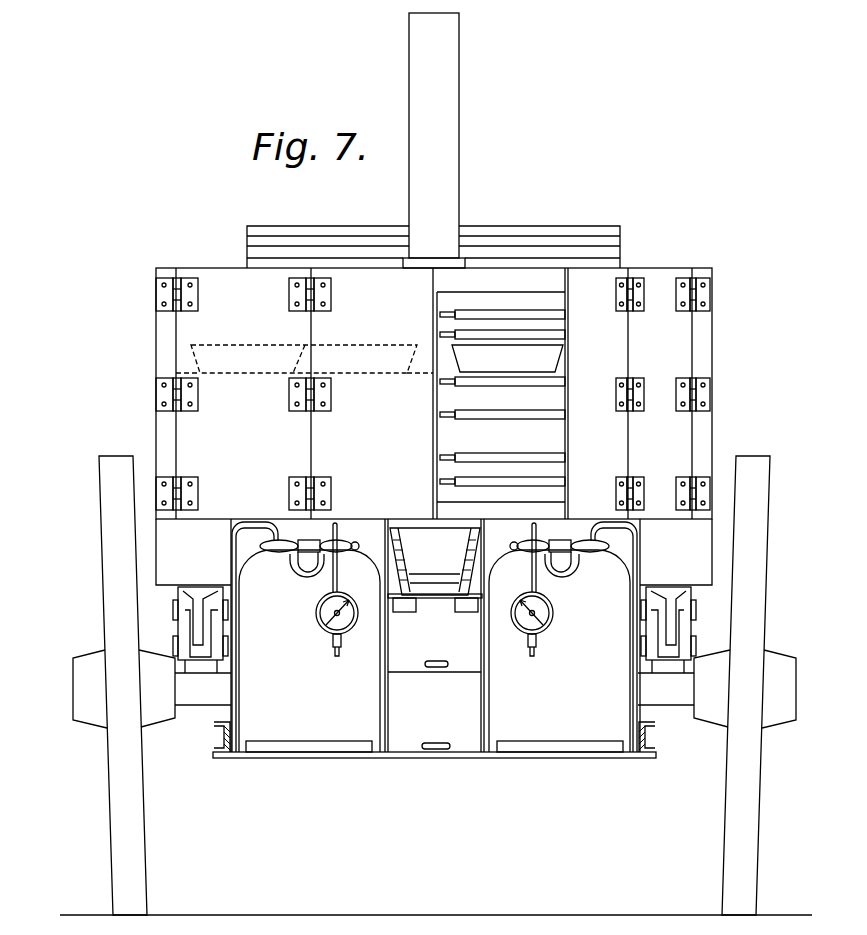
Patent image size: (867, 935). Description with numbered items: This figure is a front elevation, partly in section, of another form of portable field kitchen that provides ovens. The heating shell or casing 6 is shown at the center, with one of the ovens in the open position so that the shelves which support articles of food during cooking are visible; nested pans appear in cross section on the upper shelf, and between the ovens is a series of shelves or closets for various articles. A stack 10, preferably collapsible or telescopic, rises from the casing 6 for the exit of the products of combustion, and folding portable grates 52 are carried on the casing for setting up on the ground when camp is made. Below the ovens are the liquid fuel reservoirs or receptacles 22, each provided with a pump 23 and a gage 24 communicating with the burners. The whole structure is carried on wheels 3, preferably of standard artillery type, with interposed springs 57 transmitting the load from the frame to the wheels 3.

The wheels 3 is at (434, 685).
The heating shell or casing 6 is at (156, 357).
The stack 10 is at (434, 140).
The reservoirs or receptacles 22 is at (434, 637).
The pumps 23 is at (434, 563).
The gages 24 is at (328, 634).
The folding portable grates 52 is at (507, 231).
The springs 57 is at (185, 627).